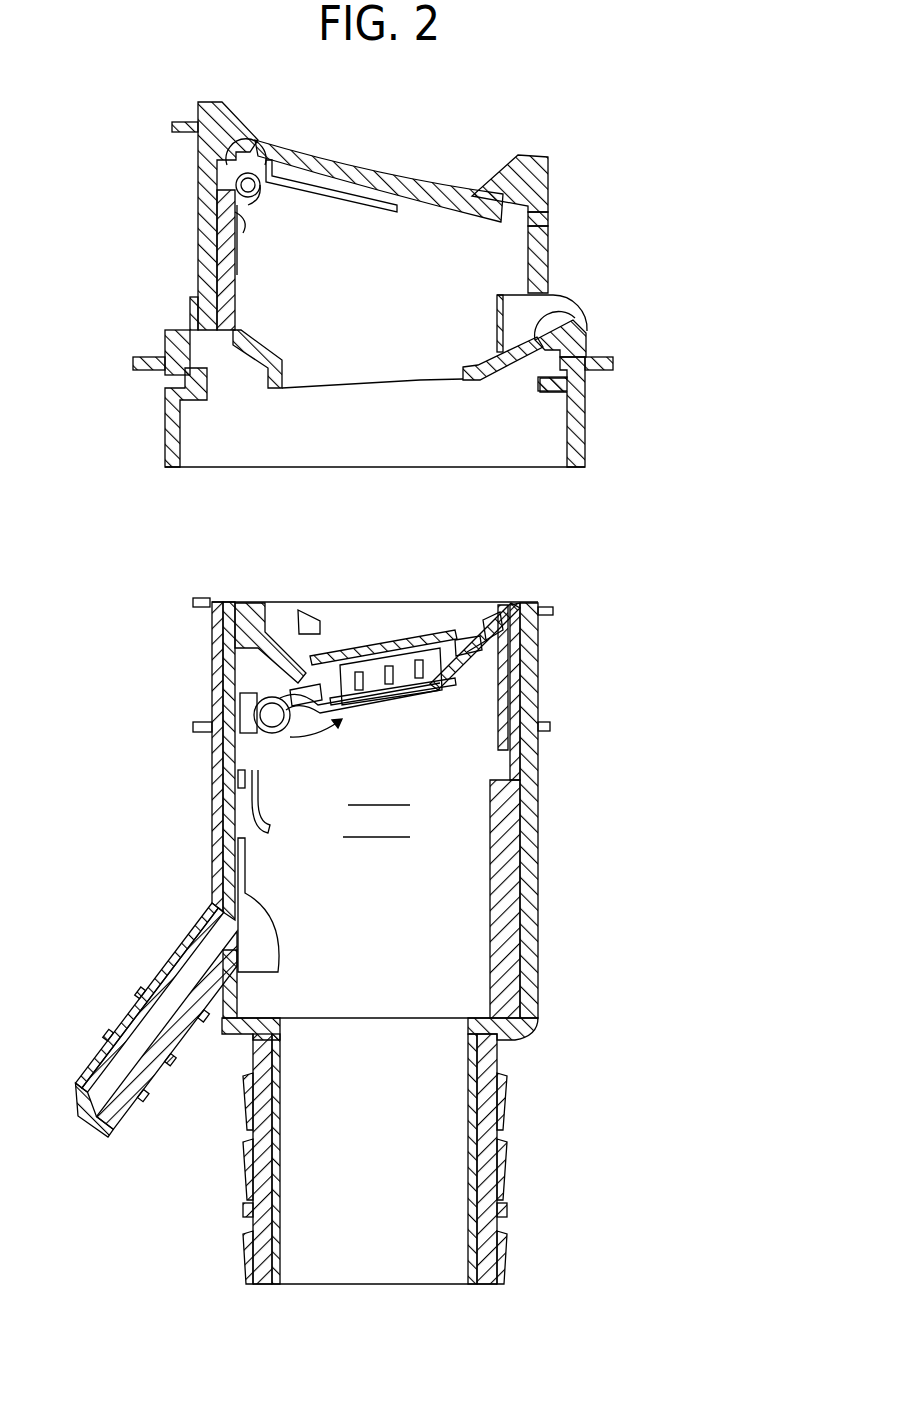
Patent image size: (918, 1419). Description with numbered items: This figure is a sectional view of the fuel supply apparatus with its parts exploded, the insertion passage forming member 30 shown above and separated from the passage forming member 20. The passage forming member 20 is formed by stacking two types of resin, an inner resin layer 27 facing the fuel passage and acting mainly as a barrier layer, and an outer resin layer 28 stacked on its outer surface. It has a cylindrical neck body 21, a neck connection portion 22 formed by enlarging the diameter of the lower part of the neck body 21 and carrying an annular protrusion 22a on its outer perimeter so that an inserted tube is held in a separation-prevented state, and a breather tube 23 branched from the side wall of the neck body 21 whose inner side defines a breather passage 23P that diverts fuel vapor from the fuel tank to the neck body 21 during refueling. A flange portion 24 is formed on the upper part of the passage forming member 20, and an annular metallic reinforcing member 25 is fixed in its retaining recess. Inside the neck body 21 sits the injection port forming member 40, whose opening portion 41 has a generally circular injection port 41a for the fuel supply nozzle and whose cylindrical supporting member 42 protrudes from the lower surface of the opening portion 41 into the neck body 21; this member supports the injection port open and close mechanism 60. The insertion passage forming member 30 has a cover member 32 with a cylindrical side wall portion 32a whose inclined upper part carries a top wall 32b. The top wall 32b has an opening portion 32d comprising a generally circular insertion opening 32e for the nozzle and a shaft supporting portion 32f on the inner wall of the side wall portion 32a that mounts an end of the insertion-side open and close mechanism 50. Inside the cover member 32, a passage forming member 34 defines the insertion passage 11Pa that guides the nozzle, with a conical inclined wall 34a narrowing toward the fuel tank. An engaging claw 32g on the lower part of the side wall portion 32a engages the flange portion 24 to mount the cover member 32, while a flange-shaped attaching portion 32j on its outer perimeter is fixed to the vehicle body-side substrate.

The passage forming member 20 is at (369, 923).
The neck body 21 is at (370, 802).
The neck connection portion 22 is at (436, 1159).
The annular protrusion 22a is at (498, 1158).
The breather tube 23 is at (143, 1020).
The breather passage 23P is at (122, 1043).
The flange portion 24 is at (548, 632).
The reinforcing member 25 is at (548, 610).
The inner resin layer 27 is at (212, 767).
The outer resin layer 28 is at (212, 822).
The insertion passage 11Pa is at (376, 806).
The insertion passage forming member 30 is at (450, 250).
The cover member 32 is at (444, 269).
The side wall portion 32a is at (548, 249).
The top wall 32b is at (548, 163).
The opening portion 32d is at (492, 176).
The insertion opening 32e is at (419, 192).
The shaft supporting portion 32f is at (232, 233).
The engaging claw 32g is at (580, 391).
The attaching portion 32j is at (595, 372).
The passage forming member 34 is at (570, 337).
The inclined wall 34a is at (478, 370).
The injection port forming member 40 is at (487, 656).
The opening portion 41 is at (459, 635).
The injection port 41a is at (478, 642).
The cylindrical supporting member 42 is at (508, 705).
The insertion-side open and close mechanism 50 is at (272, 140).
The injection port open and close mechanism 60 is at (265, 712).